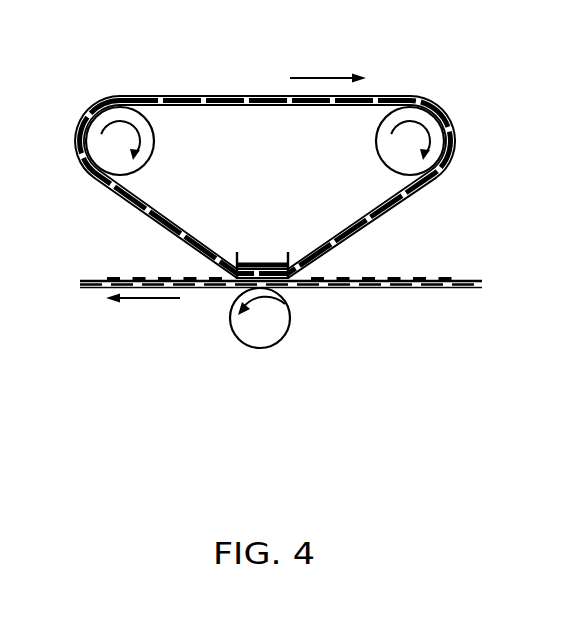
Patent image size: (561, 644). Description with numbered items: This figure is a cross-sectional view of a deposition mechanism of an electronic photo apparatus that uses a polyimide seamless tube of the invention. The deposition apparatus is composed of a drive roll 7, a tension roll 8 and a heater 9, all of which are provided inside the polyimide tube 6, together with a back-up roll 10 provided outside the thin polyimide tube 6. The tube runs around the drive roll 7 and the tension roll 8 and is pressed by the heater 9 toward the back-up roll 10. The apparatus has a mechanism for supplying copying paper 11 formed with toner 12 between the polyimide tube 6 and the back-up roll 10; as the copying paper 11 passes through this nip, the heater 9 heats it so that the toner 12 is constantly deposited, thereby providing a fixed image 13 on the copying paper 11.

The polyimide tube 6 is at (206, 96).
The drive roll 7 is at (114, 96).
The tension roll 8 is at (432, 107).
The heater 9 is at (258, 252).
The back-up roll 10 is at (278, 328).
The copying paper 11 is at (470, 291).
The toner 12 is at (418, 278).
The fixed image 13 is at (112, 278).